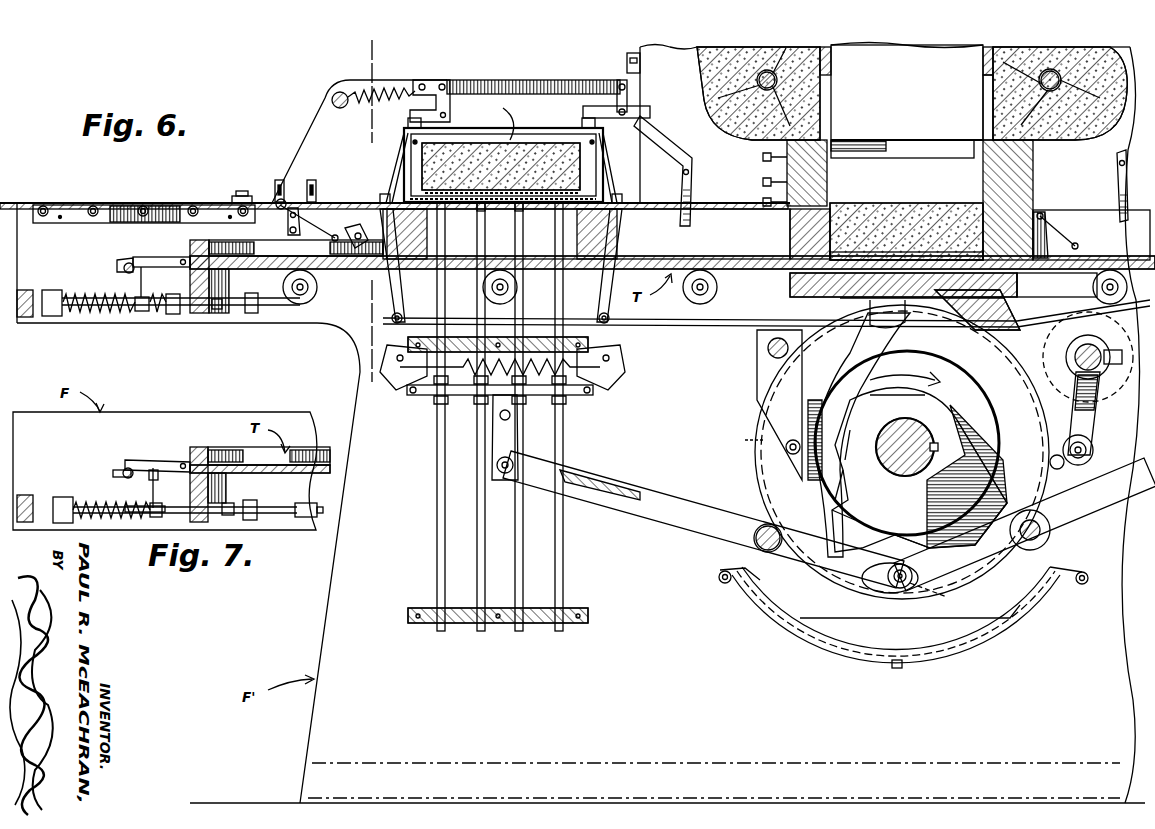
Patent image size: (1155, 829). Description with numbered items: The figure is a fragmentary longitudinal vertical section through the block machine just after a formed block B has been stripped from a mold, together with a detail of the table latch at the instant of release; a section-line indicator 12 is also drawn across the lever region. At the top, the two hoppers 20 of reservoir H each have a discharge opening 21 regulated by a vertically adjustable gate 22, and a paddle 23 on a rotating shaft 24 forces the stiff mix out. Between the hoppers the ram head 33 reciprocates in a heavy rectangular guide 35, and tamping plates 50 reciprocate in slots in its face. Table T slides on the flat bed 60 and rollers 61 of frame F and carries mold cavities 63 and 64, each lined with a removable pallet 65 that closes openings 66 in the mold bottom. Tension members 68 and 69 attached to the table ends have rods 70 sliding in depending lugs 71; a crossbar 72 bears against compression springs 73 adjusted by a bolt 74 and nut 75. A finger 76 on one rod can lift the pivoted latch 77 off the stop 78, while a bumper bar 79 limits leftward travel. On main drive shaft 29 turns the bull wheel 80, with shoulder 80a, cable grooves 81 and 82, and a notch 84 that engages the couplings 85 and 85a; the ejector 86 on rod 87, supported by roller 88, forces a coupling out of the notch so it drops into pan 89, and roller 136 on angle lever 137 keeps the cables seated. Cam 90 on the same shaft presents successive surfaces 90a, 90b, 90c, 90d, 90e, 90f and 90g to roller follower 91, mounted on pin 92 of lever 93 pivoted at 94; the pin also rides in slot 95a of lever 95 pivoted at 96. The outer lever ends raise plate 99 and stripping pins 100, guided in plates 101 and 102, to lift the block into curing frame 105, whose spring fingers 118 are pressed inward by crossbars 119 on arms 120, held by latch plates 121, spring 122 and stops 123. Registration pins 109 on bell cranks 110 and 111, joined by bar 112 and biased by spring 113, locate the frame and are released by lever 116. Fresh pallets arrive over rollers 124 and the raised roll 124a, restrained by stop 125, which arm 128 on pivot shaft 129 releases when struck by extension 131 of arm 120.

In FIG. 6, the section line 12 is at (362, 48).
In FIG. 6, the hopper 20 is at (983, 78).
In FIG. 6, the discharge opening 21 is at (831, 102).
In FIG. 6, the vertically adjustable gate 22 is at (832, 62).
In FIG. 6, the paddle 23 is at (1120, 42).
In FIG. 6, the rotating shaft 24 is at (760, 80).
In FIG. 6, the main drive shaft 29 is at (932, 450).
In FIG. 6, the traveling head 33 is at (907, 92).
In FIG. 6, the rectangular guide 35 is at (830, 183).
In FIG. 6, the tamping plate 50 is at (910, 145).
In FIG. 6, the flat bed 60 is at (800, 290).
In FIG. 6, the roller 61 is at (318, 287).
In FIG. 6, the mold cavity 63 is at (617, 240).
In FIG. 6, the mold cavity 64 is at (830, 232).
In FIG. 6, the removable pallet 65 is at (830, 254).
In FIG. 6, the opening 66 is at (1017, 288).
In FIG. 6, the tension member 68 is at (665, 327).
In FIG. 6, the tension member 69 is at (1010, 605).
In FIG. 6, the rod 70 is at (266, 310).
In FIG. 7, the rod 70 is at (280, 515).
In FIG. 6, the depending lug 71 is at (214, 284).
In FIG. 7, the depending lug 71 is at (208, 488).
In FIG. 6, the crossbar 72 is at (52, 316).
In FIG. 7, the crossbar 72 is at (70, 523).
In FIG. 6, the compression spring 73 is at (88, 295).
In FIG. 7, the compression spring 73 is at (93, 500).
In FIG. 6, the bolt 74 is at (232, 314).
In FIG. 7, the bolt 74 is at (250, 500).
In FIG. 6, the nut 75 is at (172, 314).
In FIG. 7, the nut 75 is at (148, 500).
In FIG. 6, the finger 76 is at (138, 280).
In FIG. 7, the finger 76 is at (160, 470).
In FIG. 6, the pivoted latch 77 is at (157, 253).
In FIG. 7, the pivoted latch 77 is at (163, 460).
In FIG. 6, the stop 78 is at (130, 262).
In FIG. 7, the stop 78 is at (133, 468).
In FIG. 6, the bumper bar 79 is at (25, 317).
In FIG. 7, the bumper bar 79 is at (28, 495).
In FIG. 6, the bull wheel 80 is at (902, 452).
In FIG. 6, the shoulder 80a is at (848, 348).
In FIG. 6, the peripheral groove 81 is at (1005, 345).
In FIG. 6, the peripheral groove 82 is at (741, 439).
In FIG. 6, the peripheral notch 84 is at (915, 312).
In FIG. 6, the coupling member 85 is at (1068, 470).
In FIG. 6, the coupling member 85a is at (750, 585).
In FIG. 6, the ejector 86 is at (757, 378).
In FIG. 6, the transversely extending rod 87 is at (768, 348).
In FIG. 6, the roller 88 is at (787, 450).
In FIG. 6, the pan 89 is at (935, 657).
In FIG. 6, the cam 90 is at (907, 470).
In FIG. 6, the circular arc cam section 90a is at (870, 398).
In FIG. 6, the cam surface 90b is at (845, 465).
In FIG. 6, the cam surface 90c is at (836, 500).
In FIG. 6, the hump 90d is at (855, 525).
In FIG. 6, the circular cam segment 90e is at (945, 555).
In FIG. 6, the small hump 90f is at (1018, 490).
In FIG. 6, the cam section 90g is at (995, 450).
In FIG. 6, the roller cam follower 91 is at (940, 594).
In FIG. 6, the pin 92 is at (903, 588).
In FIG. 6, the operating lever 93 is at (668, 514).
In FIG. 6, the pivot 94 is at (758, 546).
In FIG. 6, the second operating lever 95 is at (1112, 515).
In FIG. 6, the slot 95a is at (865, 592).
In FIG. 6, the pivot 96 is at (1040, 545).
In FIG. 6, the horizontal plate 99 is at (540, 395).
In FIG. 6, the stripping pin 100 is at (450, 530).
In FIG. 6, the guide plate 101 is at (540, 625).
In FIG. 6, the guide plate 102 is at (545, 340).
In FIG. 6, the curing frame 105 is at (404, 152).
In FIG. 6, the registration pin 109 is at (408, 122).
In FIG. 6, the bell crank 110 is at (445, 92).
In FIG. 6, the bell crank 111 is at (628, 98).
In FIG. 6, the bar 112 is at (536, 80).
In FIG. 6, the spring 113 is at (408, 90).
In FIG. 6, the lever 116 is at (692, 180).
In FIG. 6, the spring finger 118 is at (393, 180).
In FIG. 6, the crossbar 119 is at (383, 194).
In FIG. 6, the arm 120 is at (401, 280).
In FIG. 6, the latch plate 121 is at (385, 378).
In FIG. 6, the tension spring 122 is at (468, 375).
In FIG. 6, the stop 123 is at (423, 330).
In FIG. 6, the supporting roller 124 is at (43, 223).
In FIG. 6, the roll 124a is at (268, 200).
In FIG. 6, the gravity-biased stop 125 is at (290, 224).
In FIG. 6, the arm 128 is at (1076, 242).
In FIG. 6, the pivot shaft 129 is at (320, 200).
In FIG. 6, the extension 131 is at (355, 246).
In FIG. 6, the roller 136 is at (1093, 448).
In FIG. 6, the angle lever 137 is at (1100, 405).